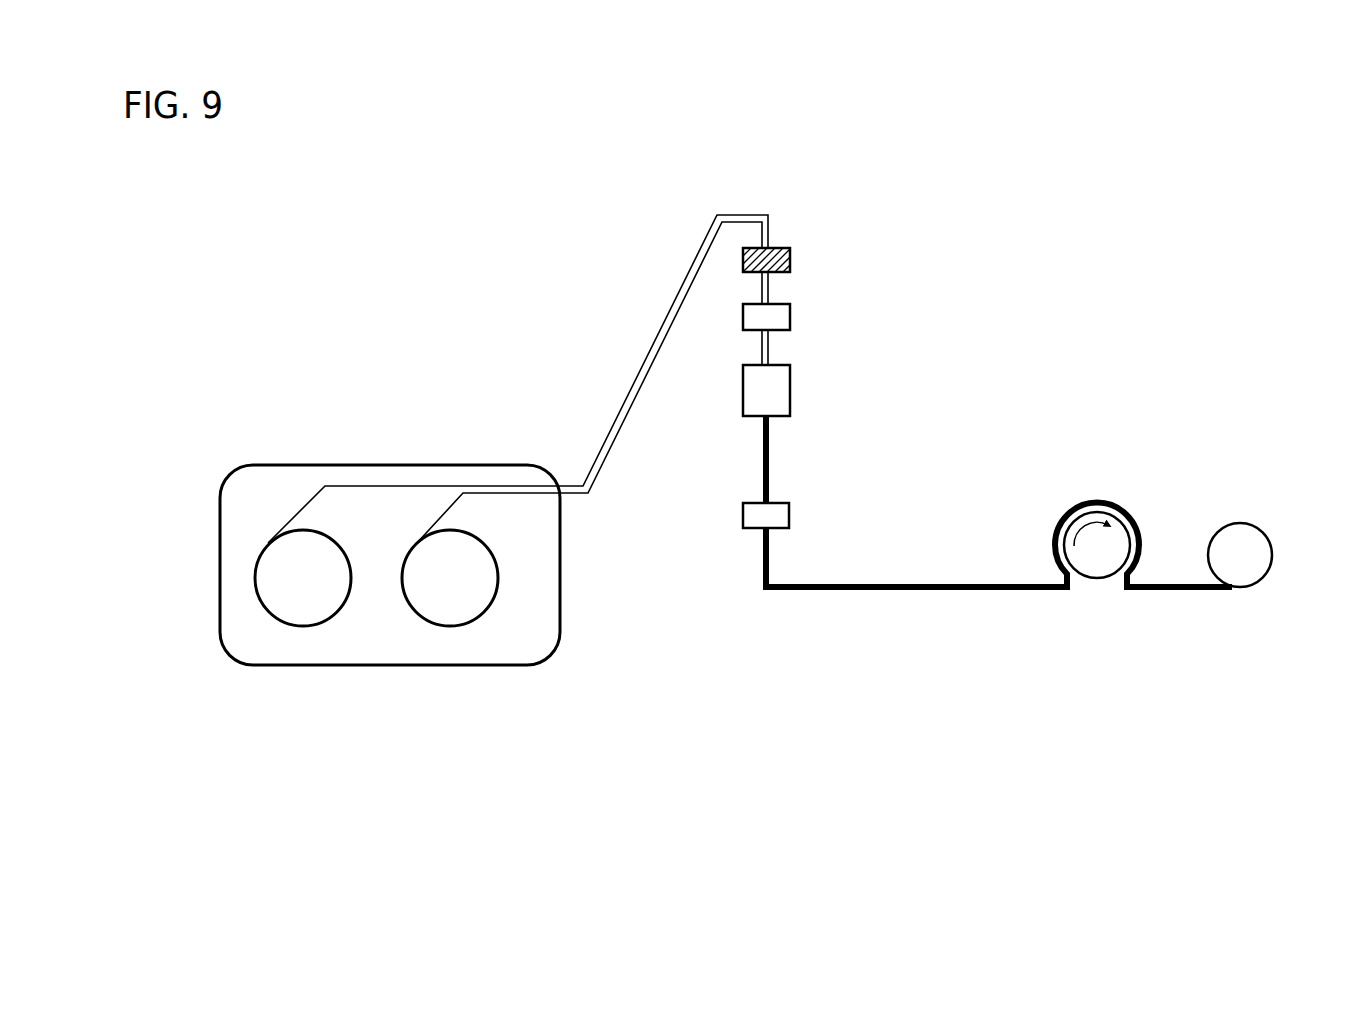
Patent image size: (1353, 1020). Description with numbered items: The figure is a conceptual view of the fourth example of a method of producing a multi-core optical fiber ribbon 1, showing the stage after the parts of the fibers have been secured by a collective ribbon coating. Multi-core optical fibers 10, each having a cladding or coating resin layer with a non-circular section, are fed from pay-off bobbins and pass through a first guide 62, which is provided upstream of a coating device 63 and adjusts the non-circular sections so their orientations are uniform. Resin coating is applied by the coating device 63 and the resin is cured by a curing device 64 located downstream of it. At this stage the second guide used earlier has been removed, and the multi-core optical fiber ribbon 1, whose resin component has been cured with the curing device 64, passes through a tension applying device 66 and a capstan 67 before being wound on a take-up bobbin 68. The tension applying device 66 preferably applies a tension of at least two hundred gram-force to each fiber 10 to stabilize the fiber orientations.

The multi-core optical fiber ribbon 1 is at (902, 592).
The multi-core optical fiber 10 is at (632, 382).
The first guide 62 is at (790, 257).
The coating device 63 is at (778, 314).
The curing device 64 is at (782, 390).
The tension applying device 66 is at (780, 517).
The capstan 67 is at (1115, 535).
The take-up bobbin 68 is at (1255, 537).